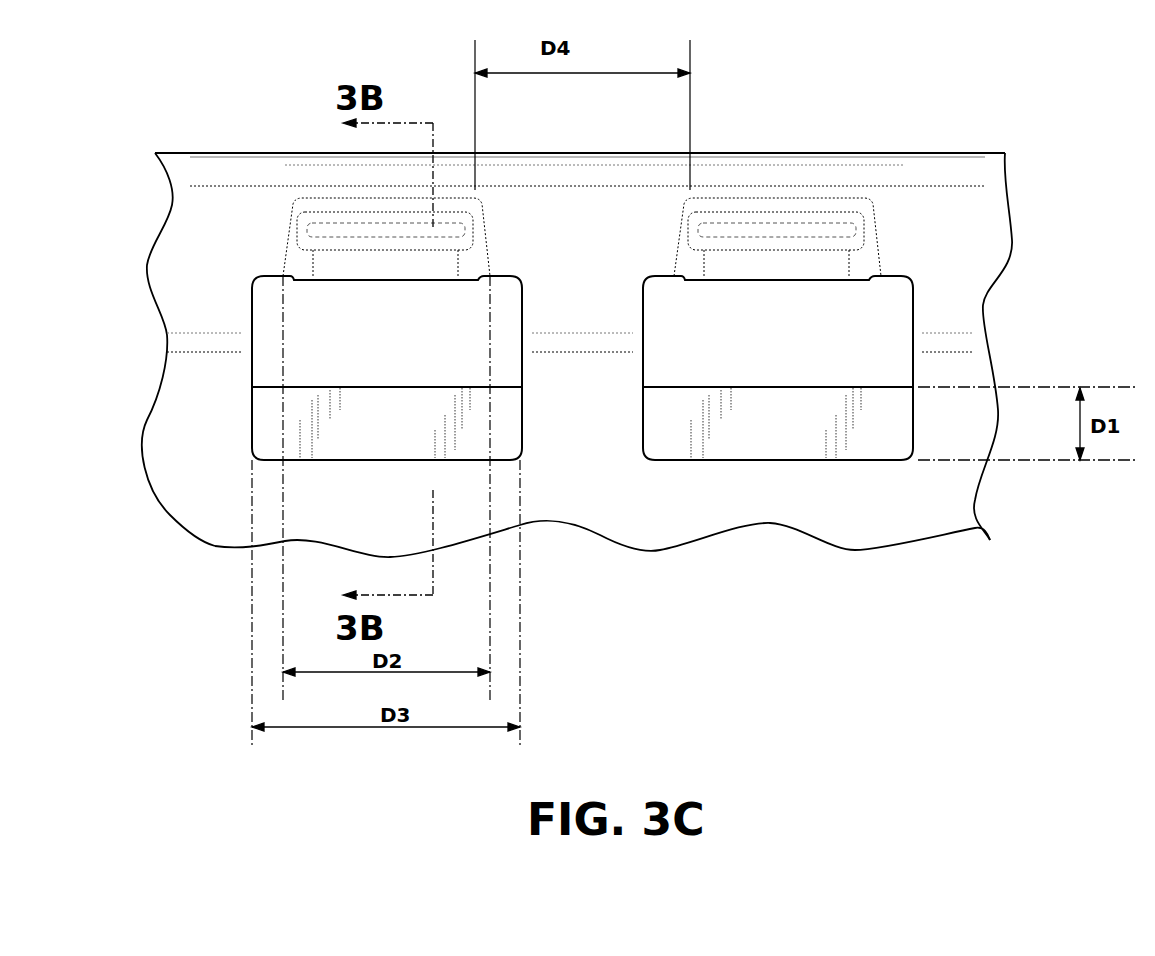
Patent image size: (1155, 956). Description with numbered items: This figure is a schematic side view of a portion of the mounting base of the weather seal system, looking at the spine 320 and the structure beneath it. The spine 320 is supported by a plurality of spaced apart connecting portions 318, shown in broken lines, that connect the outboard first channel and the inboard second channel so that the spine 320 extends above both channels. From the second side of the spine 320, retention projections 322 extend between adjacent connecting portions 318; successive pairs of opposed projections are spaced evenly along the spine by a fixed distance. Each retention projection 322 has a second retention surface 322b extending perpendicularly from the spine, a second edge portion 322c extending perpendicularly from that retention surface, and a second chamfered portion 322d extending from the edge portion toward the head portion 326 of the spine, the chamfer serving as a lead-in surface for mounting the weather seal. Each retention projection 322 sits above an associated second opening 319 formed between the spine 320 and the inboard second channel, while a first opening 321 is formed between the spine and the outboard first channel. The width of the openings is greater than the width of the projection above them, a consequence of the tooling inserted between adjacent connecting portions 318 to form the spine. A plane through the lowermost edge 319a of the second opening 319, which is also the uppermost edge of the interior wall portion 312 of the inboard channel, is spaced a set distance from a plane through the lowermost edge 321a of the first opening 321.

The interior wall portion 312 is at (198, 446).
The connecting portions 318 is at (227, 490).
The second opening 319 is at (360, 438).
The lowermost edge of the second opening 319a is at (795, 463).
The spine 320 is at (588, 213).
The first opening 321 is at (397, 298).
The lowermost edge of the first opening 321a is at (878, 388).
The retention projection 322 is at (290, 196).
The second retention surface 322b is at (345, 288).
The second edge portion 322c is at (345, 262).
The second chamfered portion 322d is at (330, 220).
The head portion 326 is at (737, 175).